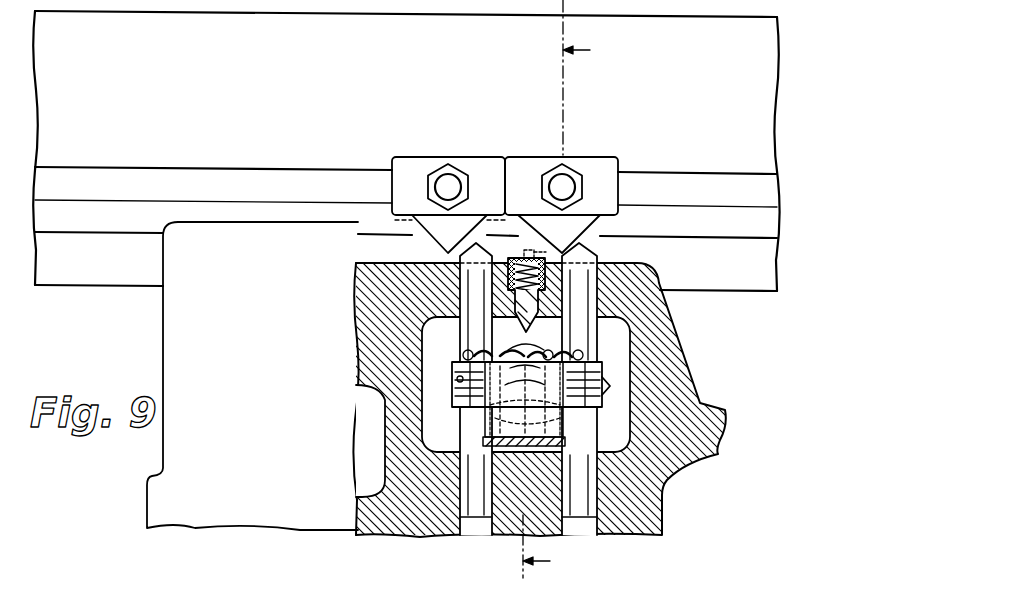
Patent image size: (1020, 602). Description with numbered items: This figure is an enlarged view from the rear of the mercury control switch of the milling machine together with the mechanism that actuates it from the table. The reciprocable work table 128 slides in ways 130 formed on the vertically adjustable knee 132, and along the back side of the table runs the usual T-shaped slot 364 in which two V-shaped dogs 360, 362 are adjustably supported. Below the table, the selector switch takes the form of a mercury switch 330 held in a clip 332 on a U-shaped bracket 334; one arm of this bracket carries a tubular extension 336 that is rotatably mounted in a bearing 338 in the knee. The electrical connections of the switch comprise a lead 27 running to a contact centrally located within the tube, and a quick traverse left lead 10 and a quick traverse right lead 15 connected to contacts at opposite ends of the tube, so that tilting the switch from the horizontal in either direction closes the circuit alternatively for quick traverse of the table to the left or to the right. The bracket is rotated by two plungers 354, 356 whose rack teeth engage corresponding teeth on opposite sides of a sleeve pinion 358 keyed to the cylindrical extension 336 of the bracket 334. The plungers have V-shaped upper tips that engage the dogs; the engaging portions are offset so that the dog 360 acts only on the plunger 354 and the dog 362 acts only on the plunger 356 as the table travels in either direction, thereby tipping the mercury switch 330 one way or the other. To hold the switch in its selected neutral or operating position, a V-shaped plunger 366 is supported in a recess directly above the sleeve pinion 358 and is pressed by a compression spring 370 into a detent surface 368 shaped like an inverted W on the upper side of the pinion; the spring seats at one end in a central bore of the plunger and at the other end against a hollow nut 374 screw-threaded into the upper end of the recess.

The quick traverse left lead 10 is at (470, 347).
The quick traverse right lead 15 is at (548, 349).
The lead 27 is at (526, 348).
The work table 128 is at (406, 151).
The ways 130 is at (160, 284).
The knee 132 is at (176, 361).
The mercury switch 330 is at (452, 389).
The clip 332 is at (524, 404).
The U-shaped bracket 334 is at (483, 441).
The tubular extension 336 is at (590, 428).
The bearing 338 is at (463, 364).
The plunger 354 is at (472, 515).
The plunger 356 is at (578, 515).
The sleeve pinion 358 is at (452, 378).
The V-shaped dog 360 is at (413, 167).
The V-shaped dog 362 is at (600, 167).
The T-shaped slot 364 is at (207, 135).
The V-shaped plunger 366 is at (545, 300).
The detent surface 368 is at (566, 344).
The compression spring 370 is at (526, 256).
The hollow nut 374 is at (528, 250).